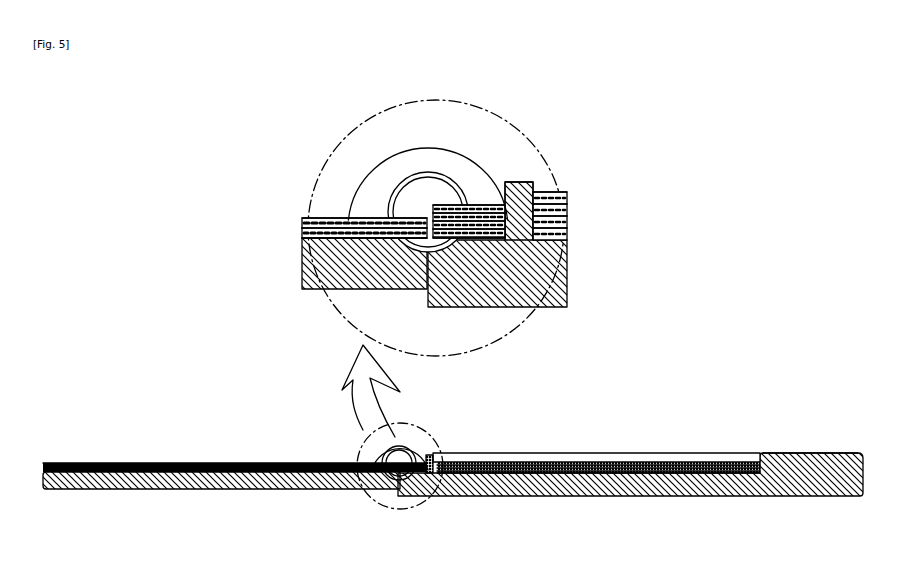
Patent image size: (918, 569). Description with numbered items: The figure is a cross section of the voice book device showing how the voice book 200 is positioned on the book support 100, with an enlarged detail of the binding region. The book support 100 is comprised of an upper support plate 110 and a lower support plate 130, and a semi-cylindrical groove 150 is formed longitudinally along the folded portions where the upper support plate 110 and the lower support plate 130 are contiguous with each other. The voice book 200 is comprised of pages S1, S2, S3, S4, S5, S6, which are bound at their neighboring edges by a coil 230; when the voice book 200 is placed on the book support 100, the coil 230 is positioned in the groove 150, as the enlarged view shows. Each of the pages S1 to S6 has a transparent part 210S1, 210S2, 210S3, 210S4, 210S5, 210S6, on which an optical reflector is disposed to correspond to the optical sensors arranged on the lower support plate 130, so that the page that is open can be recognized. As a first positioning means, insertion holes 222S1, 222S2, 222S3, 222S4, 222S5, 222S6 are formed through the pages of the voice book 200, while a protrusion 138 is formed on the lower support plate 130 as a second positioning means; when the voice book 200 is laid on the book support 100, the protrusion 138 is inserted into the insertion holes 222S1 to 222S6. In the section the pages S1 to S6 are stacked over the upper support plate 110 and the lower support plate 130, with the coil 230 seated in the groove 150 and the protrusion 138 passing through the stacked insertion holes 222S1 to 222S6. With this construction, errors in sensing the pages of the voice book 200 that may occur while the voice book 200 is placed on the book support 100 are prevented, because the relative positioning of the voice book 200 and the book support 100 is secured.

The book support 100 is at (793, 440).
The upper support plate 110 is at (300, 275).
The lower support plate 130 is at (557, 272).
The protrusion 138 is at (522, 182).
The semi-cylindrical groove 150 is at (388, 284).
The voice book 200 is at (247, 462).
The coil 230 is at (395, 138).
The transparent part 210S1 is at (350, 218).
The transparent part 210S2 is at (372, 218).
The transparent part 210S3 is at (421, 218).
The transparent part 210S4 is at (445, 218).
The transparent part 210S5 is at (463, 212).
The transparent part 210S6 is at (483, 205).
The insertion hole 222S1 is at (302, 249).
The insertion hole 222S2 is at (333, 218).
The insertion hole 222S3 is at (567, 195).
The insertion hole 222S4 is at (567, 205).
The insertion hole 222S5 is at (567, 215).
The insertion hole 222S6 is at (567, 225).
The page S1 is at (302, 233).
The page S2 is at (302, 220).
The page S3 is at (567, 229).
The page S4 is at (567, 233).
The page S5 is at (567, 237).
The page S6 is at (567, 241).